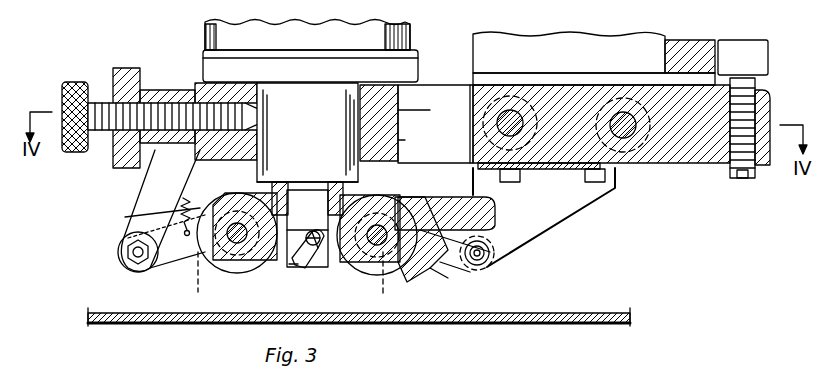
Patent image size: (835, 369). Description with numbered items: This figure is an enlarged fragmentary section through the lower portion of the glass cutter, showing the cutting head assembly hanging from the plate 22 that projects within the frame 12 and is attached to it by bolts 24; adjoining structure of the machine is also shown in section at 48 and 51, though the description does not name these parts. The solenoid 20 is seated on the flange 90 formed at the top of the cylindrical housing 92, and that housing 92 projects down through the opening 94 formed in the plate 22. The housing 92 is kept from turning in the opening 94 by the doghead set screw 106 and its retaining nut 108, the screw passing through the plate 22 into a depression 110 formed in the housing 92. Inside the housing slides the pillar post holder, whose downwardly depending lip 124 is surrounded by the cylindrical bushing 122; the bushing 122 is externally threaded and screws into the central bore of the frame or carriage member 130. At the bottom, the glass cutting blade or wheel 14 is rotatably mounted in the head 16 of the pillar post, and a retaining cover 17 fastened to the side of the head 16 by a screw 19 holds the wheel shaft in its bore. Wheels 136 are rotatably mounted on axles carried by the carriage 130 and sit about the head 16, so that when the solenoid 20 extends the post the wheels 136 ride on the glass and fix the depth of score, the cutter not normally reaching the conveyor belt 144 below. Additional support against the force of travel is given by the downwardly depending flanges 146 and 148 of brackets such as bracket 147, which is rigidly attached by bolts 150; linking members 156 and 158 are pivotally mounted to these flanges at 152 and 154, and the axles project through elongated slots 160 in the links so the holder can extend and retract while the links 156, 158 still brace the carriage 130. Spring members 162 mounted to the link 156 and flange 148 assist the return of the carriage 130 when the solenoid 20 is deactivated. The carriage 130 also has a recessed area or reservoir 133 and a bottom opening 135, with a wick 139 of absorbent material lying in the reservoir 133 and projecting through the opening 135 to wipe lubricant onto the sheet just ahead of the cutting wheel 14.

The frame 12 is at (476, 42).
The glass cutting blade or wheel 14 is at (296, 266).
The head 16 is at (287, 265).
The retaining cover 17 is at (312, 246).
The screw 19 is at (332, 252).
The solenoid 20 is at (205, 25).
The plate 22 is at (707, 165).
The bolts 24 is at (634, 135).
The block 48 is at (768, 52).
The rack 51 is at (752, 180).
The flange 90 is at (418, 73).
The cylindrical housing 92 is at (400, 132).
The opening 94 is at (402, 116).
The doghead set screw 106 is at (98, 90).
The retaining nut 108 is at (135, 68).
The depression 110 is at (268, 118).
The bushing 122 is at (272, 190).
The downwardly depending lip 124 is at (297, 185).
The frame or carriage member 130 is at (196, 178).
The recessed area or reservoir 133 is at (472, 200).
The bottom opening 135 is at (432, 272).
The wheels 136 is at (249, 272).
The wick 139 is at (422, 272).
The conveyor belt 144 is at (606, 315).
The downwardly depending flange 146 is at (550, 228).
The bracket 147 is at (540, 170).
The downwardly depending flange 148 is at (147, 193).
The bolts 150 is at (600, 195).
The pivot mounting 152 is at (128, 262).
The pivot mounting 154 is at (482, 258).
The linking member 156 is at (168, 268).
The linking member 158 is at (445, 265).
The elongated slots 160 is at (294, 277).
The spring members 162 is at (137, 215).